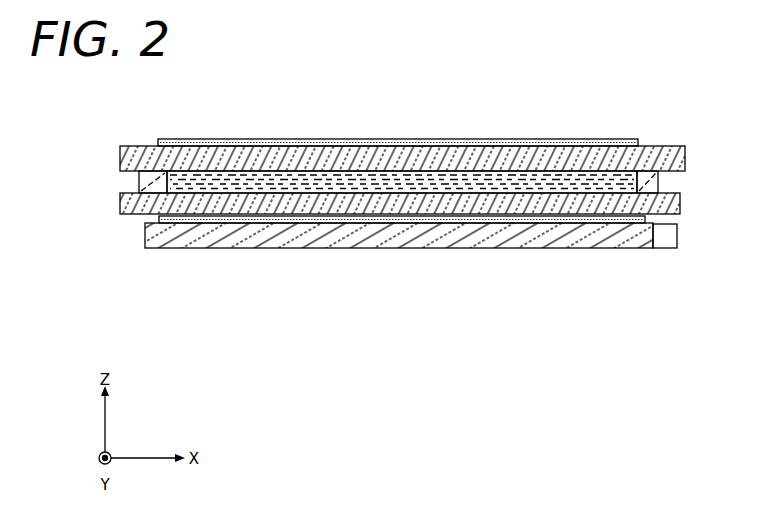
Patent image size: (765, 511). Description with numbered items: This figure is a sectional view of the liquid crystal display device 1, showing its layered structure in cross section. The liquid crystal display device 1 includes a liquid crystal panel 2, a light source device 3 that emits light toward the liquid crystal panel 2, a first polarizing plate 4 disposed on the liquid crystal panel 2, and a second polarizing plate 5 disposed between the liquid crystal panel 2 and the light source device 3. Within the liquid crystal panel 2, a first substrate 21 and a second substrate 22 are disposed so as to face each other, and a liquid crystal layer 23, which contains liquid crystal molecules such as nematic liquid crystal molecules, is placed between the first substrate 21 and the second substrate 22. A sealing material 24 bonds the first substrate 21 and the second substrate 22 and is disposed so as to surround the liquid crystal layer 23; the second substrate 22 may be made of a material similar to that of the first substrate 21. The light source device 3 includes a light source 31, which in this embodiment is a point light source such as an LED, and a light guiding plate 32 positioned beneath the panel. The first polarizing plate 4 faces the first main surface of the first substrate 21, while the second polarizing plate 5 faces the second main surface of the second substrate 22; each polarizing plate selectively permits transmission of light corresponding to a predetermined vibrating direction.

The liquid crystal display device 1 is at (436, 72).
The liquid crystal panel 2 is at (700, 145).
The first substrate 21 is at (260, 158).
The second substrate 22 is at (391, 205).
The liquid crystal layer 23 is at (540, 184).
The sealing material 24 is at (650, 184).
The first polarizing plate 4 is at (367, 140).
The second polarizing plate 5 is at (195, 221).
The light source device 3 is at (617, 297).
The light source 31 is at (670, 242).
The light guiding plate 32 is at (636, 242).